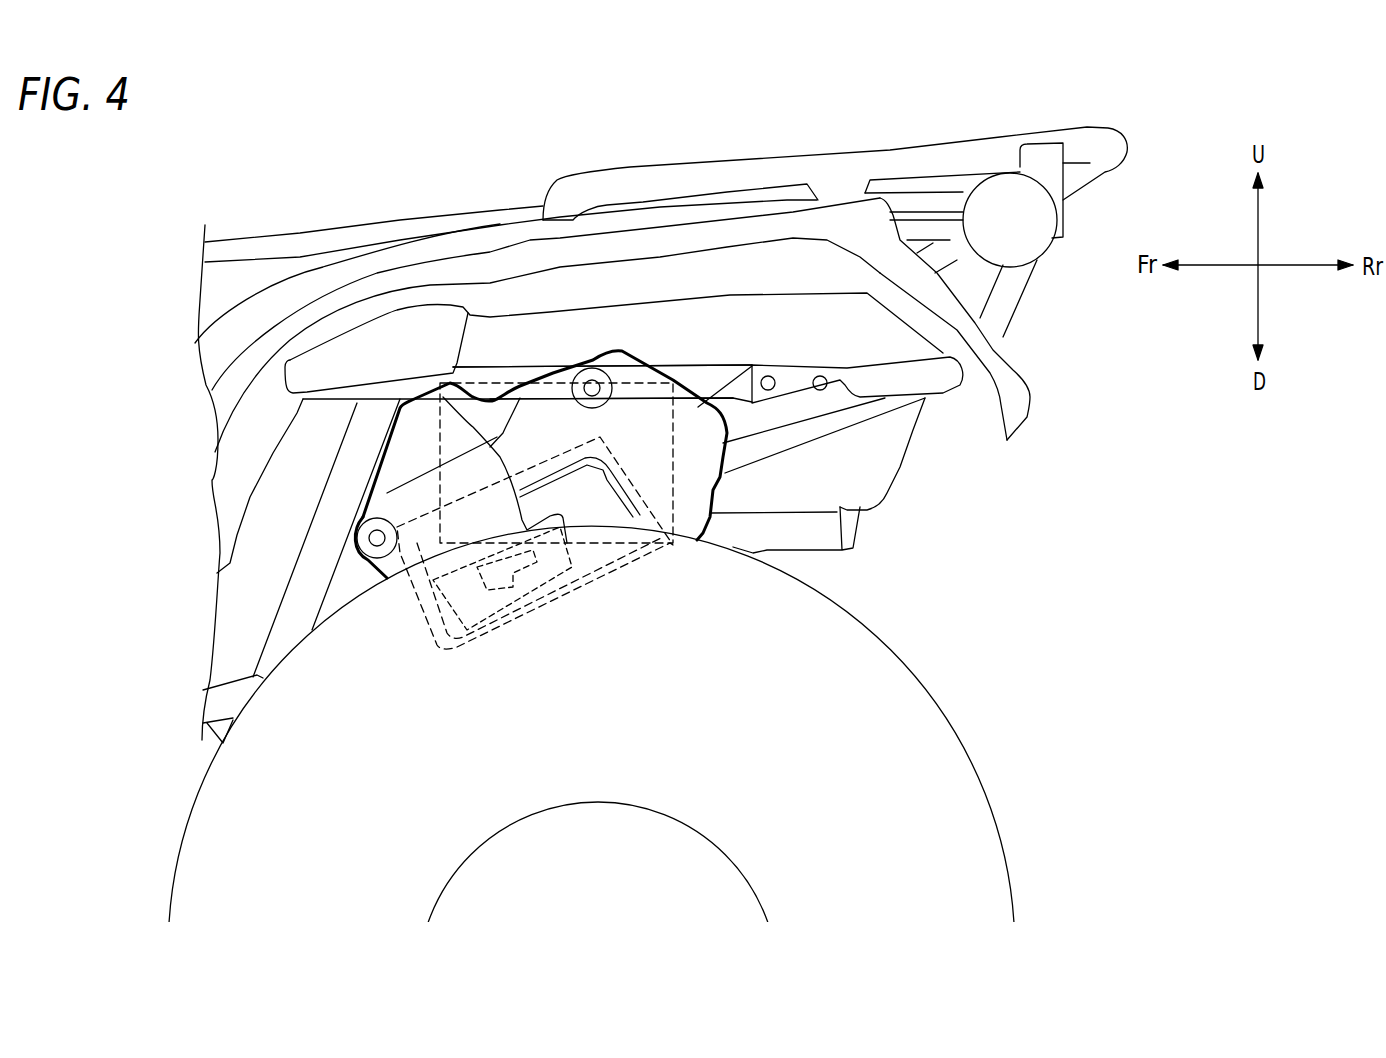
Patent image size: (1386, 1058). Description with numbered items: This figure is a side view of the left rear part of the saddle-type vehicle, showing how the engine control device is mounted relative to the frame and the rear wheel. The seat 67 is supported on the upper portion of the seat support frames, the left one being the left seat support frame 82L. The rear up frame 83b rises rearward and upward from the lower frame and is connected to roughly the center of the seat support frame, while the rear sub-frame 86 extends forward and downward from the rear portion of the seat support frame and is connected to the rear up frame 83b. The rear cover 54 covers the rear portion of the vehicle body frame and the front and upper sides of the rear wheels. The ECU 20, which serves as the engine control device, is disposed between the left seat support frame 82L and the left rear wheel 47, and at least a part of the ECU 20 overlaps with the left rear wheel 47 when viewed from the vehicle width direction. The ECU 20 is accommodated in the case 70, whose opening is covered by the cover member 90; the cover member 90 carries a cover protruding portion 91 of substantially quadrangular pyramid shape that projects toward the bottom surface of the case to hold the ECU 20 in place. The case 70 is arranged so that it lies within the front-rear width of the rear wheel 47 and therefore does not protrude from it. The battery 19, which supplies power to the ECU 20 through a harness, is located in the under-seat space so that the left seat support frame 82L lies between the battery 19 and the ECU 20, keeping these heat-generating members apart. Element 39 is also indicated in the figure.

The seat 67 is at (230, 270).
The rear up frame 83b is at (352, 460).
The left seat support frame 82L is at (695, 372).
The rear cover 54 is at (782, 222).
The cover member 90 is at (752, 366).
The rear sub-frame 86 is at (817, 423).
The case 70 is at (736, 483).
The rear fender block 39 is at (807, 532).
The left rear wheel 47 is at (893, 683).
The cover protruding portion 91 is at (517, 573).
The ECU 20 is at (567, 543).
The battery 19 is at (670, 500).